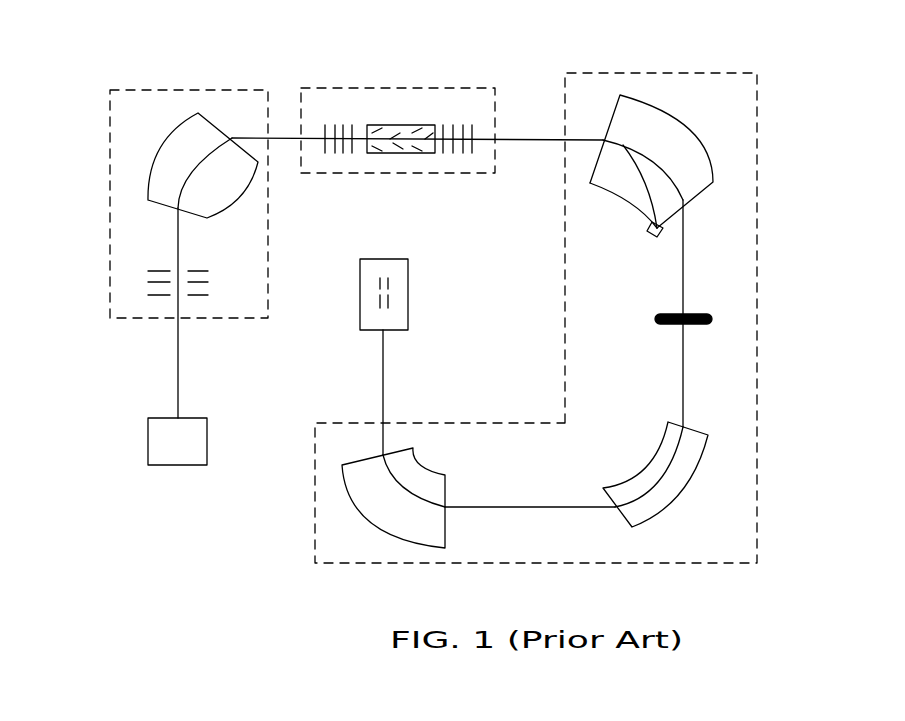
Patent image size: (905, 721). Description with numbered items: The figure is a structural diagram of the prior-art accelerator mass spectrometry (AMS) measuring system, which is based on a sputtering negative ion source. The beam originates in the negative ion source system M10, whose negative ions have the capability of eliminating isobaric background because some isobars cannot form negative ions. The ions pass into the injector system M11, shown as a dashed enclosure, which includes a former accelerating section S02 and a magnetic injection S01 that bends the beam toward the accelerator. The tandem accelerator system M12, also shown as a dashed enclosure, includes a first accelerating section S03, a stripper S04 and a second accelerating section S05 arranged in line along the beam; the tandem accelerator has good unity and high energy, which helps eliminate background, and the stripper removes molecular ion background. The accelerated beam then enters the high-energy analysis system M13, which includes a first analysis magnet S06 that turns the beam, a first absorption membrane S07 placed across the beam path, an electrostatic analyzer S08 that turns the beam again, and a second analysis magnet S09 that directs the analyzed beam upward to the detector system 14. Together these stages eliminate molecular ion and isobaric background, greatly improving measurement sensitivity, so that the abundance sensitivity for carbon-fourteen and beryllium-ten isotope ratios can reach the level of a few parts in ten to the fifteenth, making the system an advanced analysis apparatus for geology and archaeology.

The negative ion source system M10 is at (148, 441).
The injector system M11 is at (108, 90).
The tandem accelerator system M12 is at (301, 88).
The high-energy analysis system M13 is at (565, 73).
The magnetic injection S01 is at (158, 146).
The former accelerating section S02 is at (145, 278).
The first accelerating section S03 is at (337, 125).
The stripper S04 is at (403, 153).
The second accelerating section S05 is at (462, 125).
The first analysis magnet S06 is at (683, 160).
The first absorption membrane S07 is at (712, 315).
The electrostatic analyzer S08 is at (708, 433).
The second analysis magnet S09 is at (370, 497).
The detector system 14 is at (405, 258).